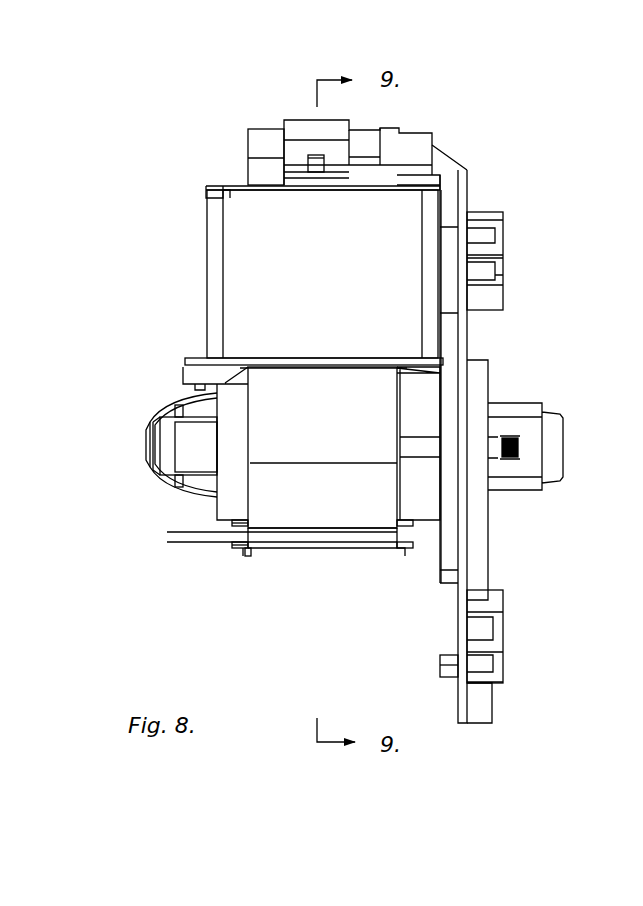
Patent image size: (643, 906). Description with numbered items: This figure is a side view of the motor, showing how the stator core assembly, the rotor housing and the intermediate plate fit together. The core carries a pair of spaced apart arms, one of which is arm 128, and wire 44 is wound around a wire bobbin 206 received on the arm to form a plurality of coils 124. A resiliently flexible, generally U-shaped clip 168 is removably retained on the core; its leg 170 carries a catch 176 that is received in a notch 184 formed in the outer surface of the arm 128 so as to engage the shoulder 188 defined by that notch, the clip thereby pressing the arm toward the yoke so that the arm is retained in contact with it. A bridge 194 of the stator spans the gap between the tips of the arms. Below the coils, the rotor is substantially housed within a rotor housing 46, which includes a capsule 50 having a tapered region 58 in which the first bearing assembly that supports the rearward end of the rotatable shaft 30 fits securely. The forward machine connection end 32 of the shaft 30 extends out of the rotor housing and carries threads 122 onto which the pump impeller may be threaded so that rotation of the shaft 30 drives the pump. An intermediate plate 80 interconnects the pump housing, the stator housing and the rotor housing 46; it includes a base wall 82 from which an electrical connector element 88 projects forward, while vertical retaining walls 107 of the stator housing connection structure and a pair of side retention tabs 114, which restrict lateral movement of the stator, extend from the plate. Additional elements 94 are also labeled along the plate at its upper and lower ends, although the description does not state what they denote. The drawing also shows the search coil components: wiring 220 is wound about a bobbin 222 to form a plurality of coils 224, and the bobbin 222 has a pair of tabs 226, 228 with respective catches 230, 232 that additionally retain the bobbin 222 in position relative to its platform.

The rotatable shaft 30 is at (495, 434).
The forward machine connection end 32 is at (493, 452).
The wire 44 is at (243, 308).
The rotor housing 46 is at (352, 394).
The capsule 50 is at (248, 425).
The tapered region 58 is at (165, 433).
The intermediate plate 80 is at (470, 188).
The base wall 82 is at (463, 208).
The electrical connector element 88 is at (535, 412).
The connector 94 is at (494, 222).
The vertical retaining walls 107 is at (447, 184).
The side retention tabs 114 is at (392, 142).
The threads 122 is at (517, 450).
The coils 124 is at (240, 254).
The arm 128 is at (268, 128).
The clip 168 is at (300, 112).
The leg 170 is at (345, 136).
The catch 176 is at (312, 163).
The notch 184 is at (250, 173).
The shoulder 188 is at (262, 160).
The bridge 194 is at (323, 579).
The wire bobbin 206 is at (228, 192).
The wiring 220 is at (167, 540).
The bobbin 222 is at (232, 548).
The coils 224 is at (237, 529).
The tab 226 is at (243, 556).
The tab 228 is at (409, 557).
The catch 230 is at (250, 553).
The catch 232 is at (397, 553).